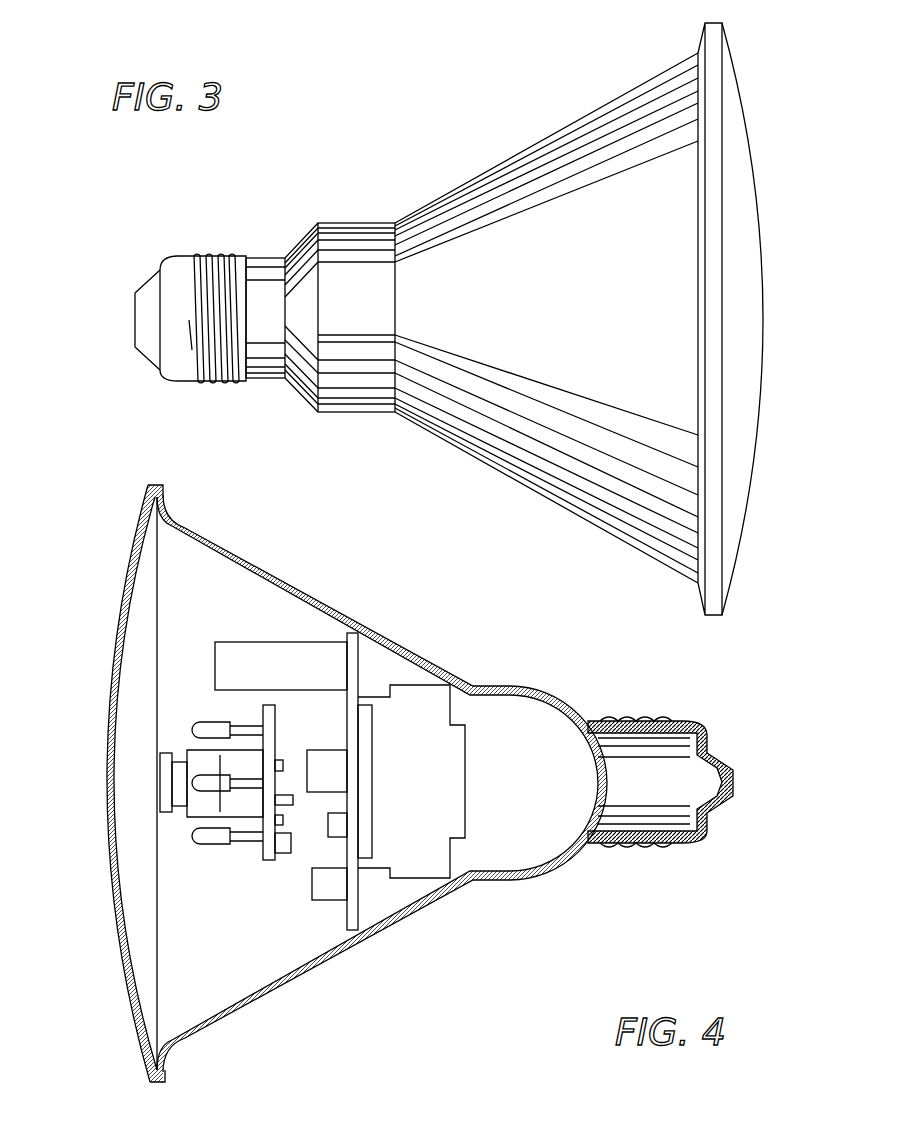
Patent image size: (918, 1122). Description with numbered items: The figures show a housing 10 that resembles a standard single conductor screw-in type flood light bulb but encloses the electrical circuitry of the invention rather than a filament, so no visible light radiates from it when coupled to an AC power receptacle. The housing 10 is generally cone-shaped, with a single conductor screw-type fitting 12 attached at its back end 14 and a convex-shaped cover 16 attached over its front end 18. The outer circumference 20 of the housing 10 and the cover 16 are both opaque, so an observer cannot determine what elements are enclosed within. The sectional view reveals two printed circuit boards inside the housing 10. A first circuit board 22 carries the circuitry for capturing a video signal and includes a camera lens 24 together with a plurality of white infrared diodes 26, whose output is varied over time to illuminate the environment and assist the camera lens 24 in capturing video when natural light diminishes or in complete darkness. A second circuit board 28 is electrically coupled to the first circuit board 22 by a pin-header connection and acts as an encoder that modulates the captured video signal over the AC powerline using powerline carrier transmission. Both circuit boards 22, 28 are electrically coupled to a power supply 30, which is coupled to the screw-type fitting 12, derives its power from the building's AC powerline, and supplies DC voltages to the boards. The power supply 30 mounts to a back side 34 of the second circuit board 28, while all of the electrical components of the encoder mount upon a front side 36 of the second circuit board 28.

In FIG. 3, the housing 10 is at (508, 313).
In FIG. 4, the housing 10 is at (270, 570).
In FIG. 3, the screw-type fitting 12 is at (215, 258).
In FIG. 4, the screw-type fitting 12 is at (670, 721).
In FIG. 3, the back end 14 is at (287, 255).
In FIG. 4, the back end 14 is at (601, 721).
In FIG. 3, the cover 16 is at (750, 157).
In FIG. 4, the cover 16 is at (122, 597).
In FIG. 3, the front end 18 is at (713, 17).
In FIG. 4, the front end 18 is at (175, 1098).
In FIG. 3, the outer circumference 20 is at (522, 288).
In FIG. 4, the first circuit board 22 is at (268, 852).
In FIG. 4, the camera lens 24 is at (165, 780).
In FIG. 4, the white infrared diodes 26 is at (211, 730).
In FIG. 4, the second circuit board 28 is at (353, 648).
In FIG. 4, the power supply 30 is at (445, 756).
In FIG. 4, the back side 34 is at (360, 675).
In FIG. 4, the front side 36 is at (348, 912).